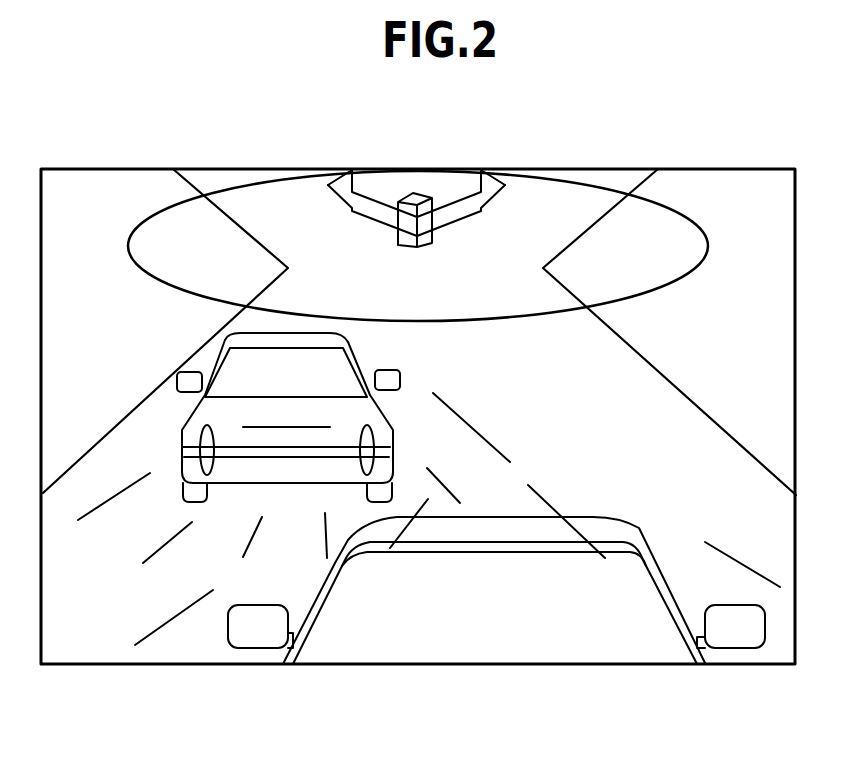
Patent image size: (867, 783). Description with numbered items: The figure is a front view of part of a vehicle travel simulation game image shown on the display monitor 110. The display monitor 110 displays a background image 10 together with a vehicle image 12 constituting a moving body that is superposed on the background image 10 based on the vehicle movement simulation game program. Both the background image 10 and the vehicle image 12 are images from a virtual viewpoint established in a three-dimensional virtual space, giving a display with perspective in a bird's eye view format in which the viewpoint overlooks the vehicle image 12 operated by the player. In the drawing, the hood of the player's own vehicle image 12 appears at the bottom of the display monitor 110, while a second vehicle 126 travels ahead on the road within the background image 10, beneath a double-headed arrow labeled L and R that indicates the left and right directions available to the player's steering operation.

The background image 10 is at (745, 365).
The vehicle image 12 is at (587, 520).
The display monitor 110 is at (200, 666).
The preceding vehicle 126 is at (355, 348).
The left direction indicator L is at (263, 229).
The right direction indicator R is at (557, 230).